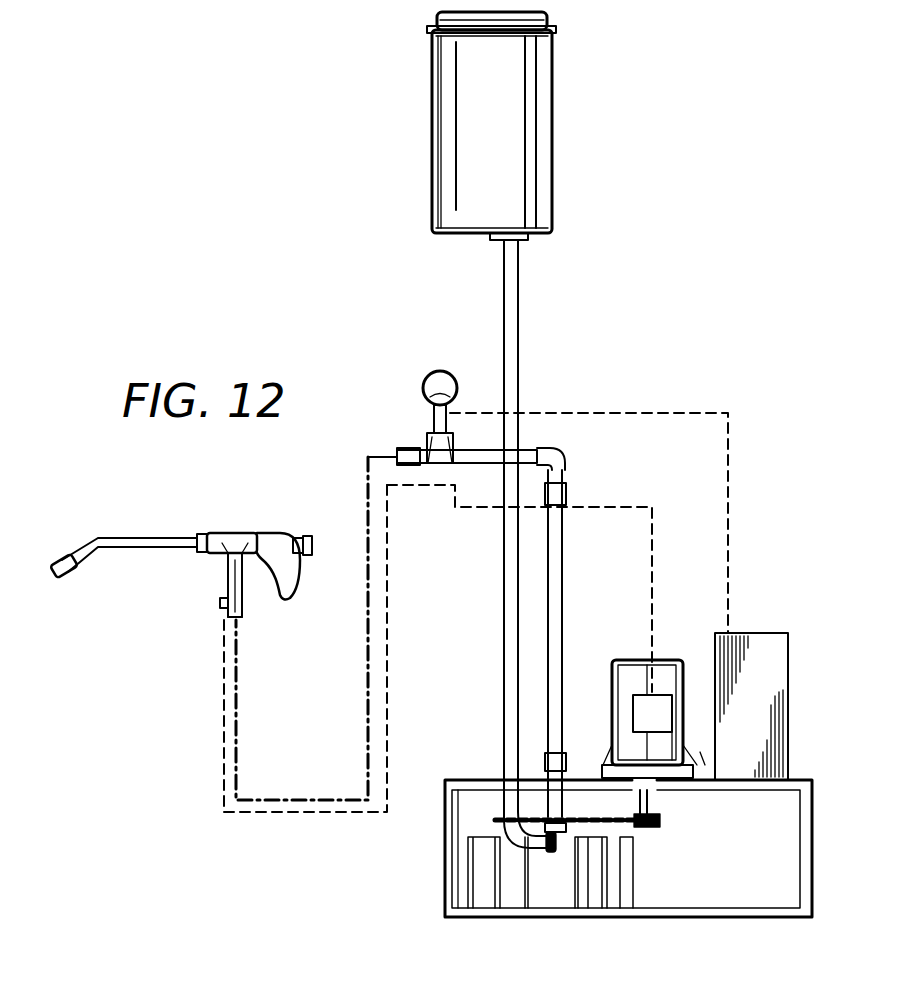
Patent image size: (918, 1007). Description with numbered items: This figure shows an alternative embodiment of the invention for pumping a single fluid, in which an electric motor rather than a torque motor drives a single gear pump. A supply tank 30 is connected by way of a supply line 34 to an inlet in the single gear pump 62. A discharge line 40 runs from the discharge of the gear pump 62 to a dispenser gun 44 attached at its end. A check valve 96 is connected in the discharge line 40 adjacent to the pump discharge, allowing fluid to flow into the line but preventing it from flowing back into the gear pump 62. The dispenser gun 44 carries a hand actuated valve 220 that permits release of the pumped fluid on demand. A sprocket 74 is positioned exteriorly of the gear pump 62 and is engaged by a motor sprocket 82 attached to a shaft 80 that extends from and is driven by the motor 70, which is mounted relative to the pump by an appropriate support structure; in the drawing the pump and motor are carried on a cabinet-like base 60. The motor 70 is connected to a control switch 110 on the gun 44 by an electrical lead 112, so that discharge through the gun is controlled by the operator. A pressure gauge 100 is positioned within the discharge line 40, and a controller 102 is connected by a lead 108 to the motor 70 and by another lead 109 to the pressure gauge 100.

The supply tank 30 is at (437, 103).
The supply line 34 is at (503, 266).
The discharge line 40 is at (562, 600).
The dispenser gun 44 is at (228, 535).
The cabinet 60 is at (722, 920).
The single gear pump 62 is at (508, 900).
The motor 70 is at (662, 660).
The sprocket 74 is at (495, 820).
The shaft 80 is at (652, 798).
The motor sprocket 82 is at (658, 826).
The check valve 96 is at (545, 762).
The pressure gauge 100 is at (425, 383).
The controller 102 is at (780, 645).
The lead 108 is at (700, 752).
The lead 109 is at (728, 460).
The control switch 110 is at (220, 603).
The electrical lead 112 is at (460, 515).
The hand actuated valve 220 is at (306, 536).